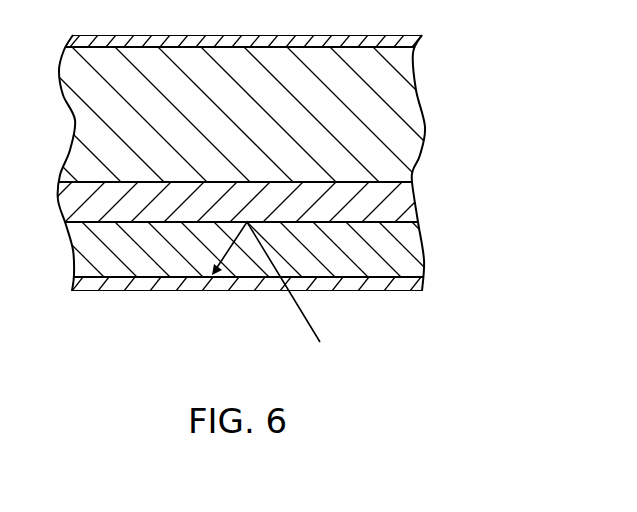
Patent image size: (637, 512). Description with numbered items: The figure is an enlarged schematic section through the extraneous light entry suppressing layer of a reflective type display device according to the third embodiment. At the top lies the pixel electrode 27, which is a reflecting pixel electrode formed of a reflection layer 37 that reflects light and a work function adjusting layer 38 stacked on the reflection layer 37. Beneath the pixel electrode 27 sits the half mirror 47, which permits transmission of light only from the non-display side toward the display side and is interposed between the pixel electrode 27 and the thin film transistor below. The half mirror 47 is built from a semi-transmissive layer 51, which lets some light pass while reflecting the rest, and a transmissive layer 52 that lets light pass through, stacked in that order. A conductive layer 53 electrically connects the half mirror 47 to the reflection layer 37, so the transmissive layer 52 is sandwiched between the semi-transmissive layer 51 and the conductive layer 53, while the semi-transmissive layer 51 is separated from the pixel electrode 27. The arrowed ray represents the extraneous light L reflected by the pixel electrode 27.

The pixel electrode 27 is at (275, 108).
The work function adjusting layer 38 is at (405, 40).
The reflection layer 37 is at (407, 92).
The half mirror 47 is at (265, 240).
The conductive layer 53 is at (407, 205).
The transmissive layer 52 is at (407, 248).
The semi-transmissive layer 51 is at (258, 286).
The extraneous light L is at (308, 322).